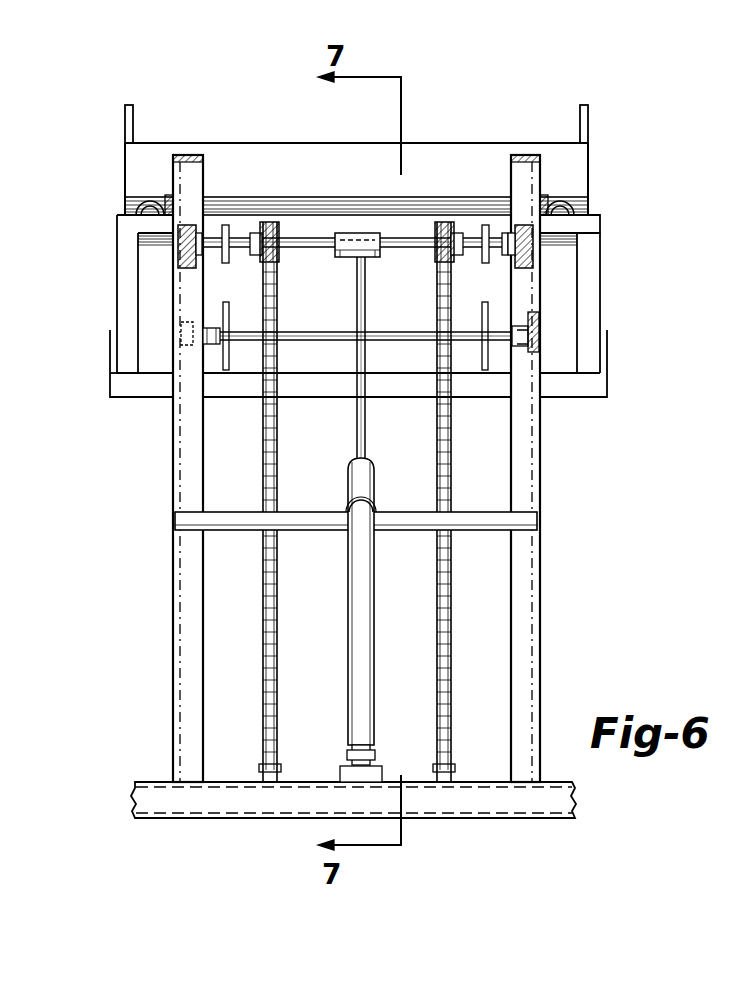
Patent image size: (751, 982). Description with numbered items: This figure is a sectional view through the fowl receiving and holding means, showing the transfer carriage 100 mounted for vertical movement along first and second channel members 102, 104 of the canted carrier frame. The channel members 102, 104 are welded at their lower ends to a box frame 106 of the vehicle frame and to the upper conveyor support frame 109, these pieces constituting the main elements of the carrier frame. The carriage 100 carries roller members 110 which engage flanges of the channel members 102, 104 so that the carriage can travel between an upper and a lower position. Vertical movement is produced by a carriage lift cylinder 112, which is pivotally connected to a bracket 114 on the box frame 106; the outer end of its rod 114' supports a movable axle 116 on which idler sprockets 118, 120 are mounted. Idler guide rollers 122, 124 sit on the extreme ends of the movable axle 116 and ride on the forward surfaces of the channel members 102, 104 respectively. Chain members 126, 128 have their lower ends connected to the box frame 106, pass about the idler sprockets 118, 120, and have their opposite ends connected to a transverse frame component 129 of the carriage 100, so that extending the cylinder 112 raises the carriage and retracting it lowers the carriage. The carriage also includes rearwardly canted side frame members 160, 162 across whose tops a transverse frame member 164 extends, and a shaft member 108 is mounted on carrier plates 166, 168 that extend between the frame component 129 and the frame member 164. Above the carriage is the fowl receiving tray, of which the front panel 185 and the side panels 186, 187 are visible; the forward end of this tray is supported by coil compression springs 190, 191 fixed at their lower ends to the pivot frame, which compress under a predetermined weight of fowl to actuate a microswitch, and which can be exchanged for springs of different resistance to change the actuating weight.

The transfer carriage 100 is at (598, 392).
The first channel member 102 is at (172, 596).
The second channel member 104 is at (536, 608).
The base 106 is at (160, 816).
The shaft member 108 is at (392, 336).
The upper conveyor support frame 109 is at (312, 512).
The roller members 110 is at (536, 326).
The carriage lift cylinder 112 is at (352, 604).
The bracket 114 is at (380, 754).
The rod 114' is at (378, 263).
The movable axle 116 is at (308, 249).
The idler sprocket 118 is at (278, 228).
The idler sprocket 120 is at (456, 226).
The idler guide roller 122 is at (188, 258).
The idler guide roller 124 is at (534, 262).
The chain member 126 is at (262, 466).
The chain member 128 is at (452, 462).
The transverse frame component 129 is at (306, 396).
The rearwardly canted side frame member 160 is at (124, 301).
The rearwardly canted side frame member 162 is at (596, 300).
The transverse frame member 164 is at (598, 226).
The carrier plate 166 is at (230, 303).
The carrier plate 168 is at (481, 308).
The front panel 185 is at (248, 148).
The side panel 186 is at (126, 126).
The side panel 187 is at (589, 124).
The coil compression spring 190 is at (168, 204).
The coil compression spring 191 is at (570, 204).